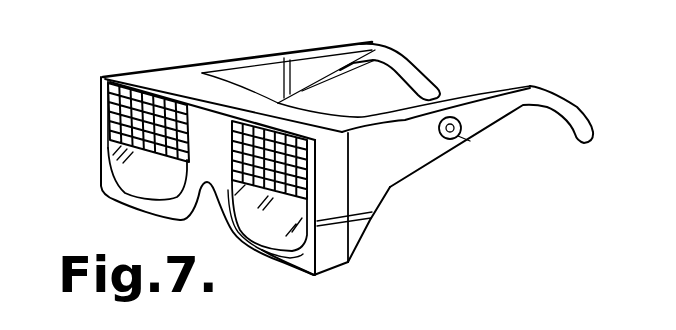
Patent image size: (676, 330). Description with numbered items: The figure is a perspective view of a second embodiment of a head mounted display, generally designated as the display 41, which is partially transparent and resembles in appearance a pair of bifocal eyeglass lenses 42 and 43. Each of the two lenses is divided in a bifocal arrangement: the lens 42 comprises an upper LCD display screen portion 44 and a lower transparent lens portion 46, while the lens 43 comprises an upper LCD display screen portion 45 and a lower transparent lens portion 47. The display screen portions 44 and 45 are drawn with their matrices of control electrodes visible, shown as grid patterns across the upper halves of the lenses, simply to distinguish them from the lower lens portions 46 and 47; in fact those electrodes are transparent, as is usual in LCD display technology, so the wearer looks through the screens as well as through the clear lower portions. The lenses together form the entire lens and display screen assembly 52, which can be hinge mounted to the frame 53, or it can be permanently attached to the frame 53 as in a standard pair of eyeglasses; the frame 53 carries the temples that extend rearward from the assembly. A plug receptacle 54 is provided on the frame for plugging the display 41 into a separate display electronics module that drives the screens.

The head mounted display 41 is at (74, 142).
The bifocal lens 42 is at (103, 166).
The bifocal lens 43 is at (301, 262).
The upper LCD display screen portion 44 is at (127, 80).
The upper LCD display screen portion 45 is at (280, 137).
The lower transparent lens portion 46 is at (158, 189).
The lower transparent lens portion 47 is at (284, 233).
The lens and display screen assembly 52 is at (332, 250).
The frame 53 is at (407, 147).
The plug receptacle 54 is at (460, 138).